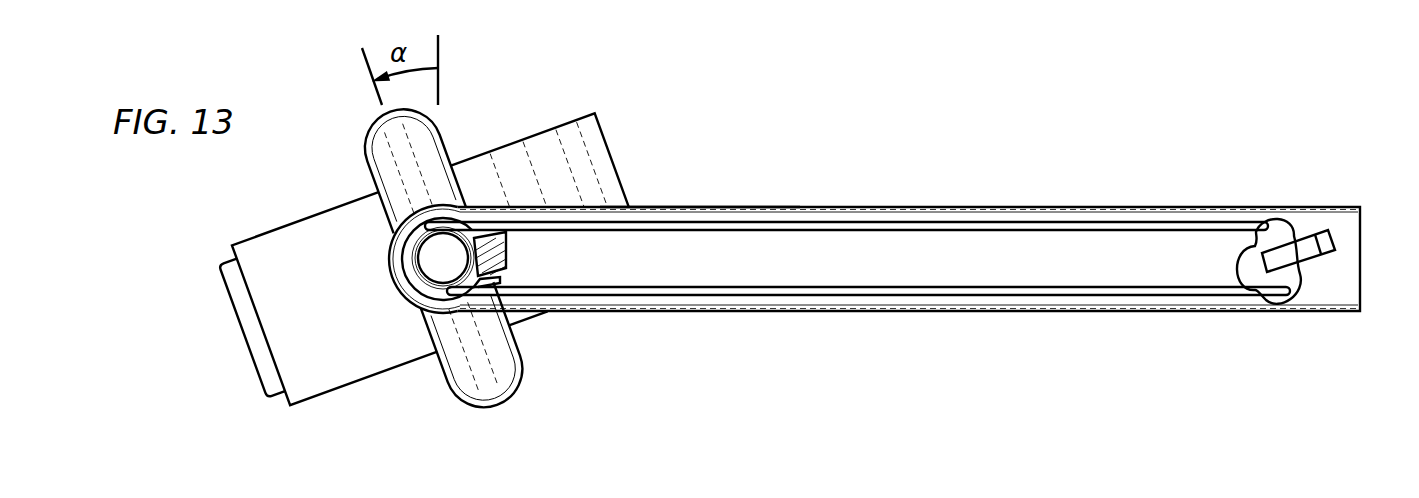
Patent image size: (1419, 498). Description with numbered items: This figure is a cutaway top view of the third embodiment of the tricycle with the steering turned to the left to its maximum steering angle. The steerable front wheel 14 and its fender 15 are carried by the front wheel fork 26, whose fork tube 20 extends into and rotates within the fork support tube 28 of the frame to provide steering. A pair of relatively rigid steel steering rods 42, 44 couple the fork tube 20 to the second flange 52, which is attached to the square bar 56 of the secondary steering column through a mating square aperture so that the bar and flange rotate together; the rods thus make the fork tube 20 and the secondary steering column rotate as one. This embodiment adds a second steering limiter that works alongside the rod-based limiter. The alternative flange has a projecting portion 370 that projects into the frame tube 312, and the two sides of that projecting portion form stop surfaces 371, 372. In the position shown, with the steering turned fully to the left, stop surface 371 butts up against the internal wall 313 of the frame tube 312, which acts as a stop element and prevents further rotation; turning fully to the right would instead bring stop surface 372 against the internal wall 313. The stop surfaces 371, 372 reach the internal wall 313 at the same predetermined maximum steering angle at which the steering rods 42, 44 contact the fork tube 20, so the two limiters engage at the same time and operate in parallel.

The front wheel 14 is at (235, 333).
The fender 15 is at (258, 249).
The fork tube 20 is at (430, 290).
The front wheel fork 26 is at (372, 180).
The fork support tube 28 is at (387, 257).
The steering rod 42 is at (900, 222).
The steering rod 44 is at (900, 297).
The second flange 52 is at (1282, 233).
The square bar 56 is at (1312, 248).
The frame tube 312 is at (1027, 207).
The internal wall 313 is at (687, 207).
The projecting portion 370 is at (503, 267).
The stop surface 371 is at (480, 214).
The stop surface 372 is at (503, 267).